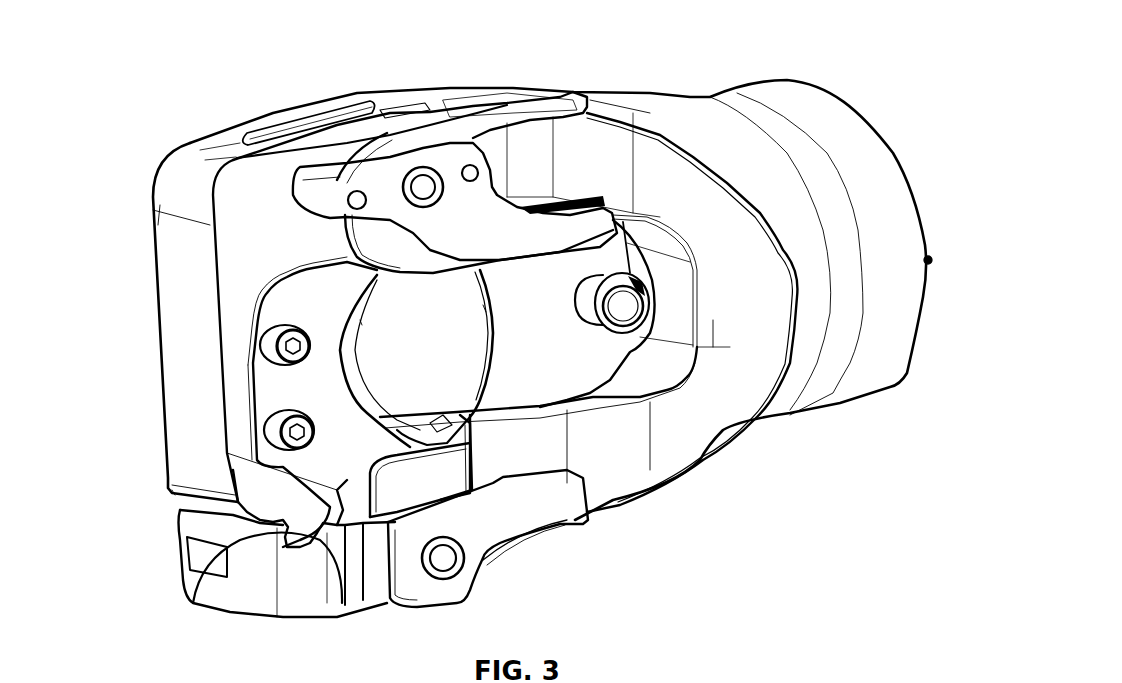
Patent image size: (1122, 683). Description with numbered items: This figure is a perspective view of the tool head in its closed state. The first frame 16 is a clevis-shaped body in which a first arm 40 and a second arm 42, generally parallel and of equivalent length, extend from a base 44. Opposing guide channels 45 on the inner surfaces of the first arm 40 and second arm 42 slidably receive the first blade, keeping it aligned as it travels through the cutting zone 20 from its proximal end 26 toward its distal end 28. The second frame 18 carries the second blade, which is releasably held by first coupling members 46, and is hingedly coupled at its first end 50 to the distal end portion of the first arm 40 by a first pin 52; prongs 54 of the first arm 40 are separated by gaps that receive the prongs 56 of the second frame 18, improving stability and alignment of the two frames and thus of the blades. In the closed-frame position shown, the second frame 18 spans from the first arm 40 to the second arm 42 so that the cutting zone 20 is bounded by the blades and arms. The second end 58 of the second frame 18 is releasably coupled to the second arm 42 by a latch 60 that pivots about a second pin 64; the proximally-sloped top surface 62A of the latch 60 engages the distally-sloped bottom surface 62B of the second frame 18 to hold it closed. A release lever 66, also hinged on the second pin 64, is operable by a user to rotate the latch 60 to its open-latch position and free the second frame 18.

The first frame 16 is at (722, 65).
The second frame 18 is at (177, 338).
The cutting zone 20 is at (474, 358).
The proximal end 26 is at (484, 304).
The distal end 28 is at (363, 322).
The first arm 40 is at (530, 142).
The second arm 42 is at (613, 498).
The base 44 is at (712, 322).
The guide channels 45 is at (437, 420).
The first coupling members 46 is at (273, 358).
The first end 50 is at (128, 166).
The first pin 52 is at (425, 183).
The prongs 54 is at (333, 102).
The prongs 56 is at (267, 127).
The second end 58 is at (140, 504).
The latch 60 is at (303, 600).
The proximally-sloped top surface 62A is at (193, 603).
The distally-sloped bottom surface 62B is at (327, 530).
The second pin 64 is at (453, 563).
The release lever 66 is at (522, 510).